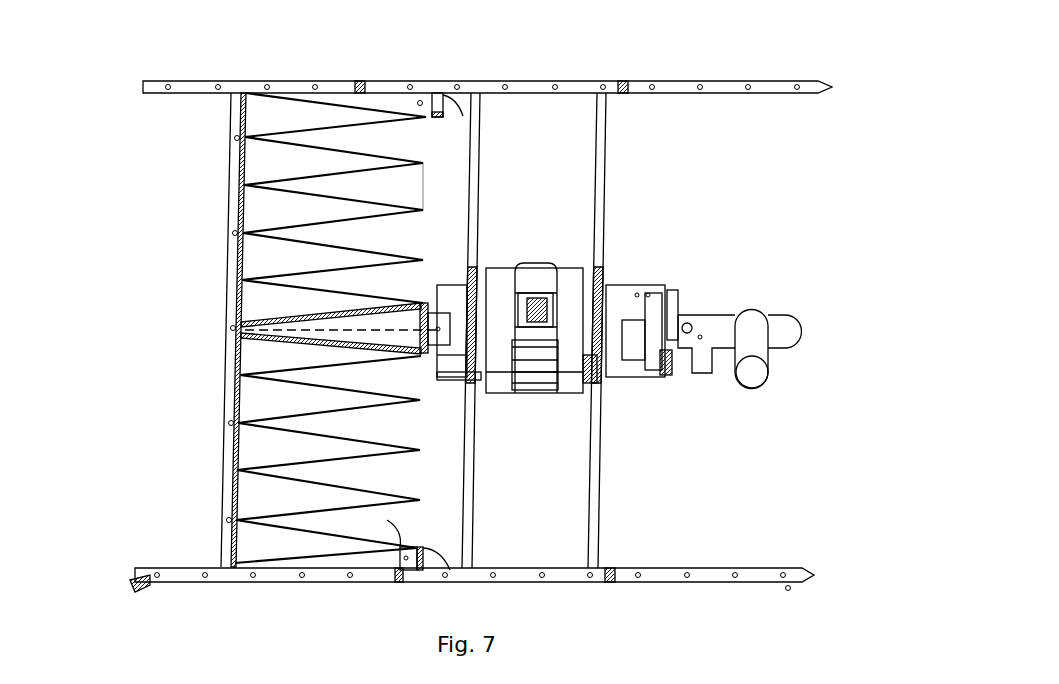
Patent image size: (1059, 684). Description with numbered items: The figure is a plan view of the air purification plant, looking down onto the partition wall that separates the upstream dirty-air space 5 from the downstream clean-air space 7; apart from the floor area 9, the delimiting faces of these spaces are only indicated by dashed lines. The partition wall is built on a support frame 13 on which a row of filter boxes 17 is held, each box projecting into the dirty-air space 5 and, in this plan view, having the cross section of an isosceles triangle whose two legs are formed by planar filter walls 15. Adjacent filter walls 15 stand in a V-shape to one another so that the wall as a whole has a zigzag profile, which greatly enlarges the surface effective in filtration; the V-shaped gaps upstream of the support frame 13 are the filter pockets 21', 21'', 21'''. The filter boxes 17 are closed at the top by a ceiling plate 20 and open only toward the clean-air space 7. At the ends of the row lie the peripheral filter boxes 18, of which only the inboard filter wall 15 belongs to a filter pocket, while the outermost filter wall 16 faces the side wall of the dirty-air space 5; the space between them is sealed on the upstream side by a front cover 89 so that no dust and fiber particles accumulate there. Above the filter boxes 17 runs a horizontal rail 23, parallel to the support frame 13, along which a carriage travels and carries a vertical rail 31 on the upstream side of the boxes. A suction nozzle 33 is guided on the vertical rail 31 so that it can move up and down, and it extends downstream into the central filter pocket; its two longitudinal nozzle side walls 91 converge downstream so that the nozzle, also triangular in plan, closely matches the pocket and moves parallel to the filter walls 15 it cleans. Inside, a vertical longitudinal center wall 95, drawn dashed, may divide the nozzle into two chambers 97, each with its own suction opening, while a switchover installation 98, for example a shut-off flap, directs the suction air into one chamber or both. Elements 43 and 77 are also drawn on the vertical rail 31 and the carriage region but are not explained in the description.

The dirty-air space 5 is at (752, 494).
The clean-air space 7 is at (180, 397).
The floor area 9 is at (632, 513).
The support frame 13 is at (227, 500).
The filter walls 15 is at (350, 413).
The outermost filter wall 16 is at (335, 555).
The filter boxes 17 is at (337, 167).
The peripheral filter boxes 18 is at (258, 113).
The ceiling plate 20 is at (255, 262).
The filter pocket 21' is at (469, 81).
The filter pocket 21'' is at (506, 124).
The filter pocket 21''' is at (391, 589).
The horizontal rail 23 is at (477, 150).
The vertical rail 31 is at (618, 285).
The suction nozzle 33 is at (230, 317).
The coupling strip 43 is at (600, 348).
The latch block with roller 77 is at (680, 322).
The front cover 89 is at (490, 580).
The nozzle side walls 91 is at (360, 347).
The vertical longitudinal center wall 95 is at (487, 376).
The chambers 97 is at (422, 308).
The switchover installation 98 is at (490, 297).